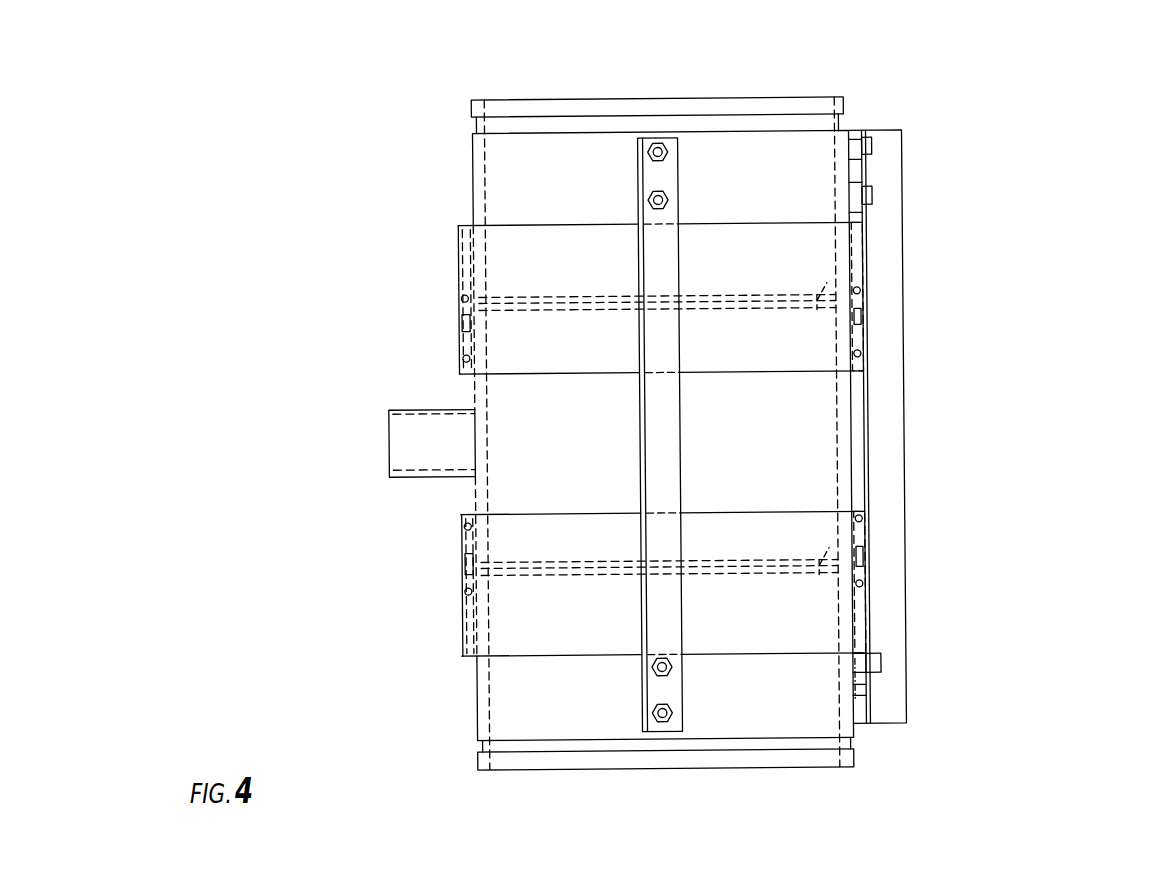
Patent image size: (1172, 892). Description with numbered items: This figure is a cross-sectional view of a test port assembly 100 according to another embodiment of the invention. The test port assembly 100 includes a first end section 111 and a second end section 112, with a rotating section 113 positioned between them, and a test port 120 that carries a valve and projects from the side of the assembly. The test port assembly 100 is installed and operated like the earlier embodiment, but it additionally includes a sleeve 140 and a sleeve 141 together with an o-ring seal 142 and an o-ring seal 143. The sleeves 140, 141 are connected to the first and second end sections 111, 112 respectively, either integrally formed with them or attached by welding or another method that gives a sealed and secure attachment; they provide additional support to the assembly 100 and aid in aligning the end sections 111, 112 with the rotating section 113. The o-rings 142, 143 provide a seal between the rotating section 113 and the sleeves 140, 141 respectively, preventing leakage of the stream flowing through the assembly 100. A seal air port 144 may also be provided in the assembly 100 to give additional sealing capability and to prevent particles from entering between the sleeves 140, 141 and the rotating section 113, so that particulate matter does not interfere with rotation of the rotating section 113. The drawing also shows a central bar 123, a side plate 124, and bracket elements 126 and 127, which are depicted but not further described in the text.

The test port assembly 100 is at (1057, 92).
The first end section 111 is at (803, 152).
The second end section 112 is at (808, 720).
The rotating section 113 is at (812, 435).
The test port 120 is at (400, 405).
The center bar 123 is at (670, 690).
The right side plate 124 is at (888, 185).
The upper right bracket 126 is at (837, 273).
The lower right bracket 127 is at (832, 555).
The sleeve 140 is at (458, 278).
The sleeve 141 is at (462, 630).
The o-ring seal 142 is at (458, 305).
The o-ring seal 143 is at (460, 587).
The seal air port 144 is at (462, 540).